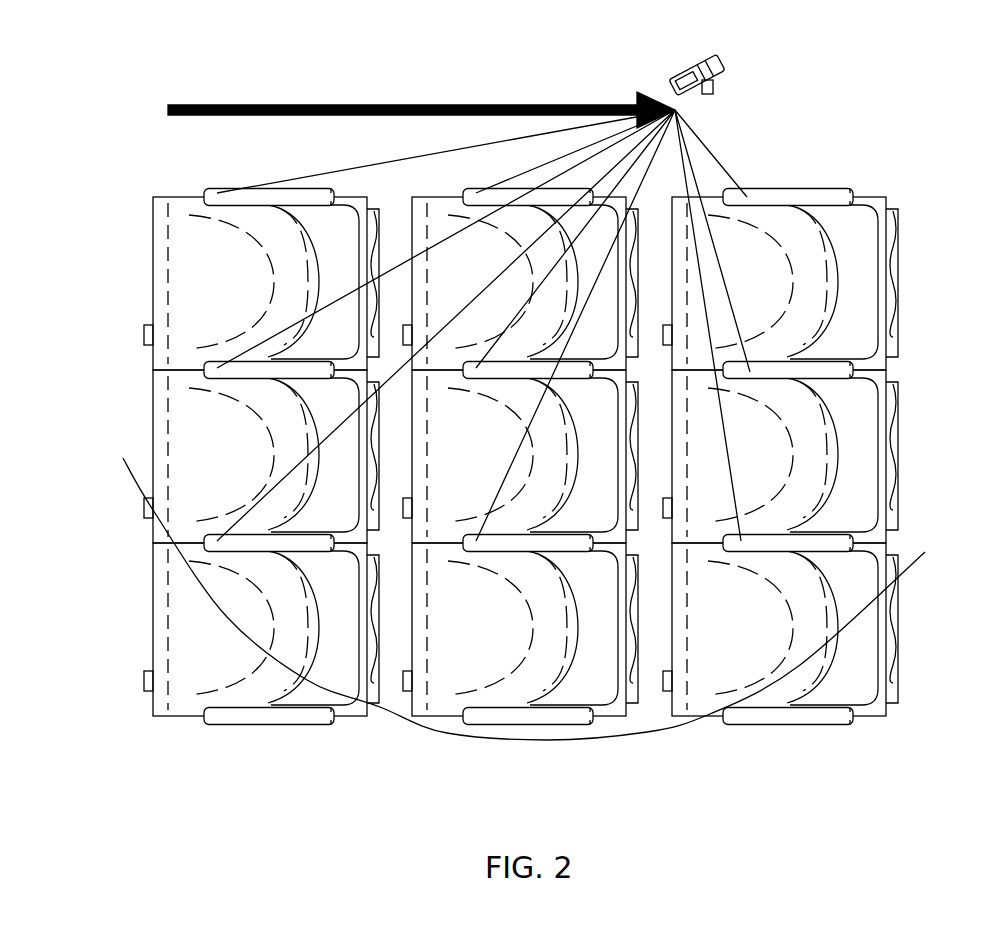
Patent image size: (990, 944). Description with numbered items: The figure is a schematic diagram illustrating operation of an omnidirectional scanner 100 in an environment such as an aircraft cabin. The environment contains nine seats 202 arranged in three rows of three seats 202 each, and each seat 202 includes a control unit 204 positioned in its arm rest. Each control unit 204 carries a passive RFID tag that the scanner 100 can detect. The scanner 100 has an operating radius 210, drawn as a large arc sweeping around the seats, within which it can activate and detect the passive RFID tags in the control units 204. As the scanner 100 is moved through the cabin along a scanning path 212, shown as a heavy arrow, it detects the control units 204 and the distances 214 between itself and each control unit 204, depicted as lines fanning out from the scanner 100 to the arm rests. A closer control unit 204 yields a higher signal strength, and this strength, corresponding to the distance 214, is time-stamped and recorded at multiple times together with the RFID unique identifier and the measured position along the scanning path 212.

The scanner 100 is at (720, 60).
The seat 202 is at (440, 220).
The control unit 204 is at (214, 194).
The operating radius 210 is at (135, 487).
The scanning path 212 is at (413, 105).
The distance 214 is at (527, 130).